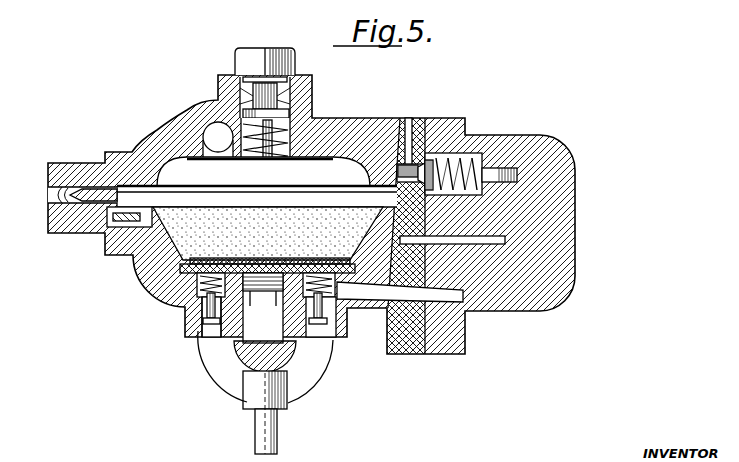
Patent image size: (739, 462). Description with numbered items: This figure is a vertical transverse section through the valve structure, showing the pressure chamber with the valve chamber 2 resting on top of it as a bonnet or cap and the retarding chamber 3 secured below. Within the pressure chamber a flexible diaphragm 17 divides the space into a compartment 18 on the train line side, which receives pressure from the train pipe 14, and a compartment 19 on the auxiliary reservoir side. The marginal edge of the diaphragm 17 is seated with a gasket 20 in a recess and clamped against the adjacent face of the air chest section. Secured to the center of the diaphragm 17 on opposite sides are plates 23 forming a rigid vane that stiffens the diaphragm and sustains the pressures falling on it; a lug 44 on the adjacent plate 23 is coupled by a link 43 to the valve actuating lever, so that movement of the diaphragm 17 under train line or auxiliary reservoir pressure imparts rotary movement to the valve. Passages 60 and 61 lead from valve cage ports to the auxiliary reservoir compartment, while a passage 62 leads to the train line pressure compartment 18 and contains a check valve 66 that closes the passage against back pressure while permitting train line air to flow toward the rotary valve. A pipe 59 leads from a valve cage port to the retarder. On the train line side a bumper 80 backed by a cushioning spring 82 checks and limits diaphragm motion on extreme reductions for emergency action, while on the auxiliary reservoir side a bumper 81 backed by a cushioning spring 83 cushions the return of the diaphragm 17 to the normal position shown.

The valve chamber 2 is at (576, 198).
The retarding chamber 3 is at (252, 380).
The train pipe 14 is at (217, 136).
The flexible diaphragm 17 is at (370, 216).
The train line pressure compartment 18 is at (187, 182).
The auxiliary reservoir pressure compartment 19 is at (303, 395).
The gasket 20 is at (159, 201).
The plates 23 is at (291, 266).
The link 43 is at (240, 342).
The lug 44 is at (265, 308).
The retarder pipe 59 is at (278, 438).
The passage 60 is at (381, 292).
The passage 61 is at (466, 245).
The passage 62 is at (407, 163).
The check valve 66 is at (468, 152).
The bumper 80 is at (289, 184).
The bumper 81 is at (195, 281).
The cushioning spring 82 is at (313, 114).
The cushioning spring 83 is at (200, 300).